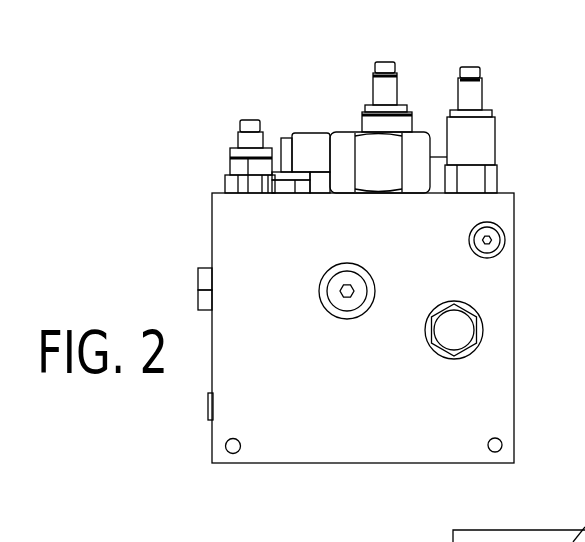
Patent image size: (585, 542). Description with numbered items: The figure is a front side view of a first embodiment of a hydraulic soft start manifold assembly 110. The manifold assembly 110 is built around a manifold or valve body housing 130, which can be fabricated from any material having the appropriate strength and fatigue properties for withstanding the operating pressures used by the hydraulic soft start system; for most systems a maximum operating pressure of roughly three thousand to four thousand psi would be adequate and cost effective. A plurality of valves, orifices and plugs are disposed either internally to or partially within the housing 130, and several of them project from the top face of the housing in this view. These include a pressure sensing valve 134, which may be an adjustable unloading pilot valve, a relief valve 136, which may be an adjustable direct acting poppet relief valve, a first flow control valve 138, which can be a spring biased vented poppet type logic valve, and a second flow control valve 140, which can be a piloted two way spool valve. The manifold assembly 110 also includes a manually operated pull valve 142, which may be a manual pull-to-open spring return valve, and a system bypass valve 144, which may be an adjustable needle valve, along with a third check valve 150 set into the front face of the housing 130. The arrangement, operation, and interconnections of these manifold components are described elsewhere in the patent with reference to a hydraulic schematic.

The manifold assembly 110 is at (190, 96).
The valve body housing 130 is at (375, 457).
The pressure sensing valve 134 is at (392, 83).
The relief valve 136 is at (483, 147).
The first flow control valve 138 is at (416, 143).
The second flow control valve 140 is at (307, 140).
The manually operated pull valve 142 is at (283, 140).
The system bypass valve 144 is at (232, 151).
The third check valve 150 is at (473, 317).